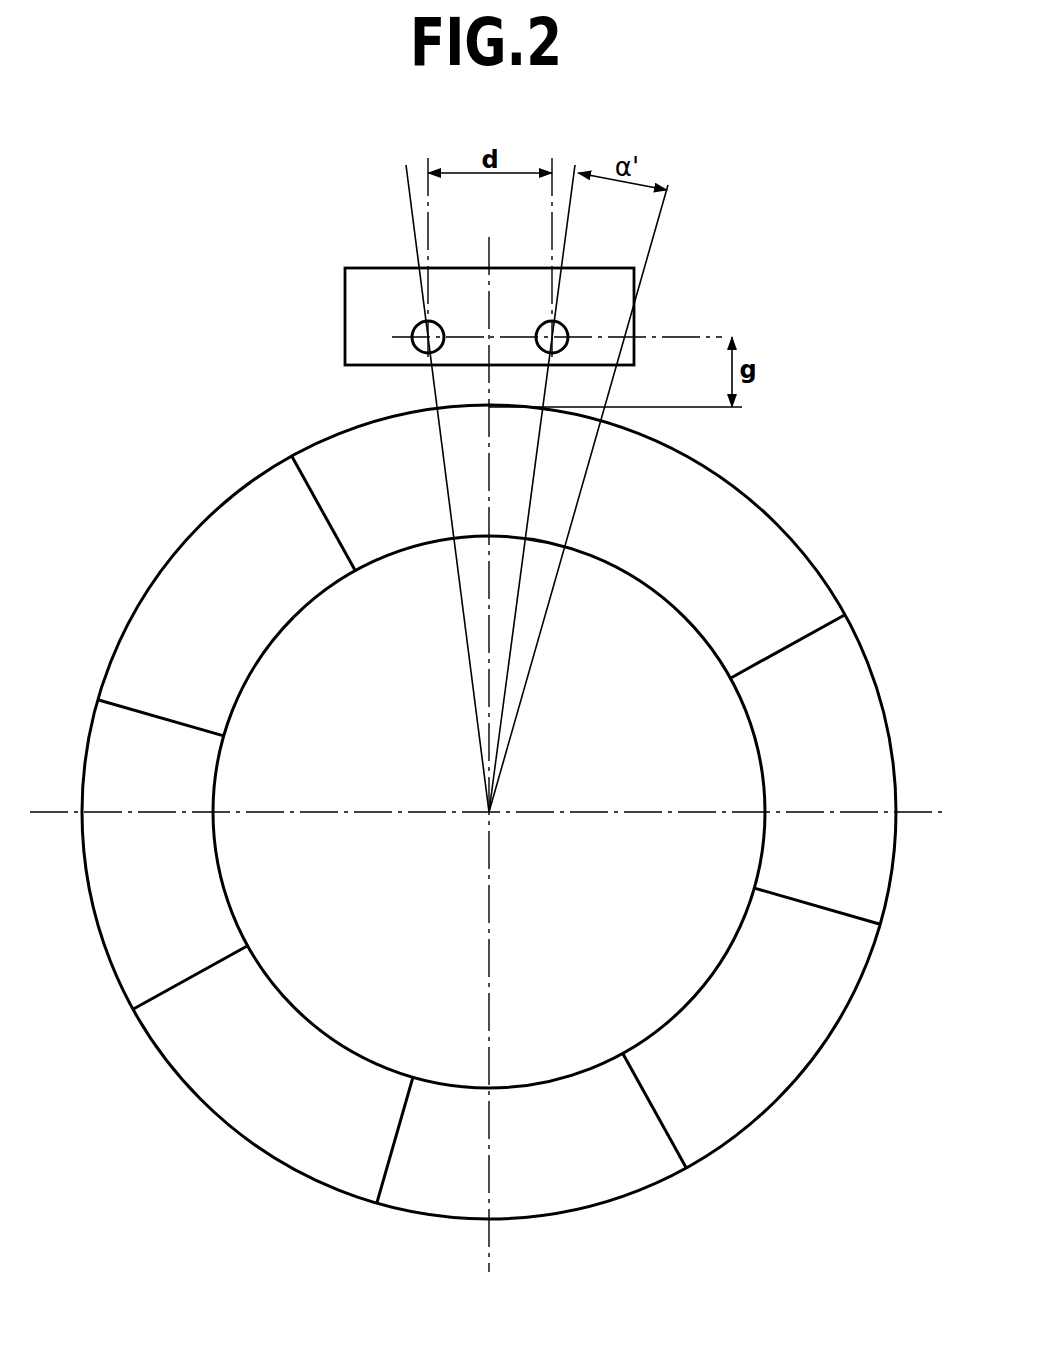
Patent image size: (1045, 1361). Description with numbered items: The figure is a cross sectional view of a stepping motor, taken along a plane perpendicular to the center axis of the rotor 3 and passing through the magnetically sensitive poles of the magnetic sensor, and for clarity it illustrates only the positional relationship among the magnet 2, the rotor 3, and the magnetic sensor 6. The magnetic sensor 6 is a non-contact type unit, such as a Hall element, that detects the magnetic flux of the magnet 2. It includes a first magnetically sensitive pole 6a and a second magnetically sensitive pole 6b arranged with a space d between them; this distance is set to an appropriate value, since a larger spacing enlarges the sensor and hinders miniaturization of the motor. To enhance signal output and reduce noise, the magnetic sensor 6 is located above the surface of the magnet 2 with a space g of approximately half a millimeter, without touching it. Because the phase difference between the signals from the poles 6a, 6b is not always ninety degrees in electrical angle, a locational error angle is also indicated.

The magnet 2 is at (162, 623).
The rotor 3 is at (367, 1020).
The magnetic sensor 6 is at (358, 289).
The first magnetically sensitive pole 6a is at (414, 346).
The second magnetically sensitive pole 6b is at (566, 327).